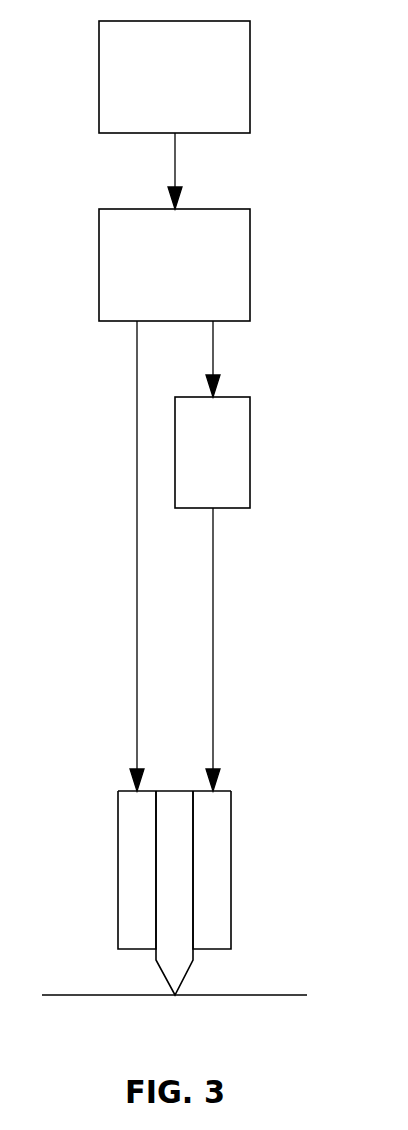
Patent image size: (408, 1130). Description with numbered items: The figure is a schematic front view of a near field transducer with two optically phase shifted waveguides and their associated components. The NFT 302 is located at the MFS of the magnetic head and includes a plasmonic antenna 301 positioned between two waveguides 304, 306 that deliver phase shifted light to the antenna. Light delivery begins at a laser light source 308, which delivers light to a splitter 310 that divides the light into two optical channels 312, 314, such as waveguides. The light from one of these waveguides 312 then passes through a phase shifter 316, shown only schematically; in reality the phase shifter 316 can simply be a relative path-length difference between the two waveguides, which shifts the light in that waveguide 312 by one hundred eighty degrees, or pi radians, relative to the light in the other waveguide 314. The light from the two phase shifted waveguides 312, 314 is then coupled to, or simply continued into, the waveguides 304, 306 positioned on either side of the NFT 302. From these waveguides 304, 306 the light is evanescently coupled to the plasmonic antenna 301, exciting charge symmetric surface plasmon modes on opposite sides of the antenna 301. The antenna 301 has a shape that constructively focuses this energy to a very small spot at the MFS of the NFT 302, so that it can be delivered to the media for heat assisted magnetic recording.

The laser light source 308 is at (214, 76).
The splitter 310 is at (214, 262).
The optical channel 312 is at (214, 352).
The optical channel 314 is at (136, 613).
The phase shifter 316 is at (251, 446).
The near field transducer 302 is at (179, 890).
The waveguide 304 is at (218, 860).
The waveguide 306 is at (128, 863).
The plasmonic antenna 301 is at (173, 965).
The media facing surface MFS is at (188, 997).